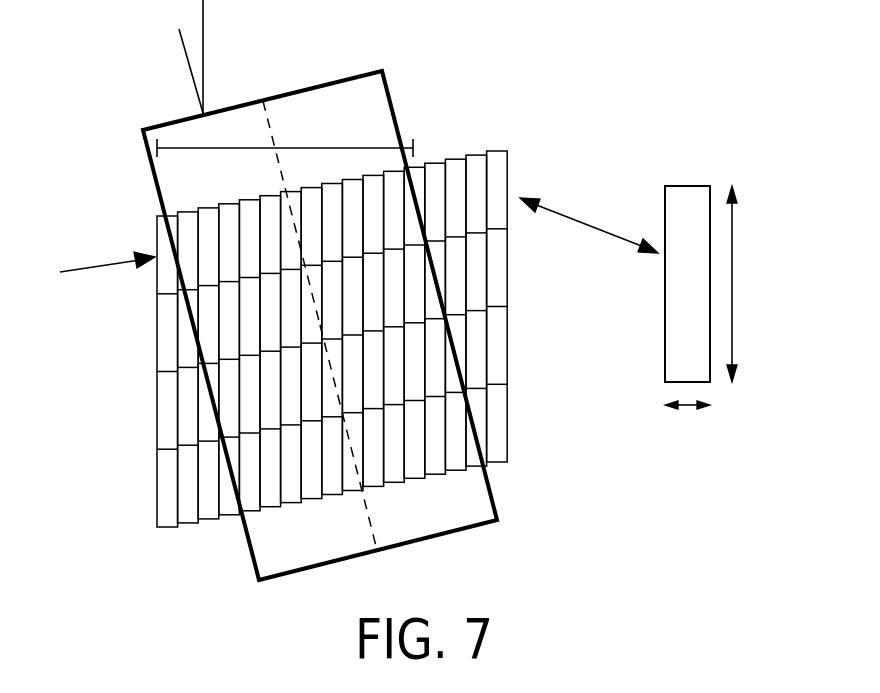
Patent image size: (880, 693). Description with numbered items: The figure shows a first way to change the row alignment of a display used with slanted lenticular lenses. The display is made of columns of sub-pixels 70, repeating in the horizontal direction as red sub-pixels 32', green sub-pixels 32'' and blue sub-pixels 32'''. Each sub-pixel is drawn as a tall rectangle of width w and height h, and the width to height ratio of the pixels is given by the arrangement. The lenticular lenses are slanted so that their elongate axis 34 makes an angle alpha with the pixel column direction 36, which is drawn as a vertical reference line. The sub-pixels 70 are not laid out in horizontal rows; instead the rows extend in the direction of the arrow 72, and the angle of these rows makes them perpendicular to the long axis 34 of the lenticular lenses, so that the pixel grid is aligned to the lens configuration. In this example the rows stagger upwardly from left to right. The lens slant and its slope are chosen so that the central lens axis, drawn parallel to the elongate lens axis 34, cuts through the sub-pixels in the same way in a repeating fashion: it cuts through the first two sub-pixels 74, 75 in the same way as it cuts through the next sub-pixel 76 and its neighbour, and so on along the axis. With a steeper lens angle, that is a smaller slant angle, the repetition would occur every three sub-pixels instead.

The red sub-pixels 32' is at (144, 395).
The green sub-pixels 32'' is at (197, 392).
The blue sub-pixels 32''' is at (224, 408).
The elongate axis of the lenticular lenses 34 is at (190, 72).
The pixel column direction 36 is at (205, 56).
The sub-pixels 70 is at (340, 352).
The arrow indicating row direction 72 is at (102, 262).
The first sub-pixel 74 is at (291, 213).
The second sub-pixel 75 is at (312, 343).
The next sub-pixel 76 is at (338, 428).
The pixel height h is at (745, 284).
The pixel width w is at (687, 419).